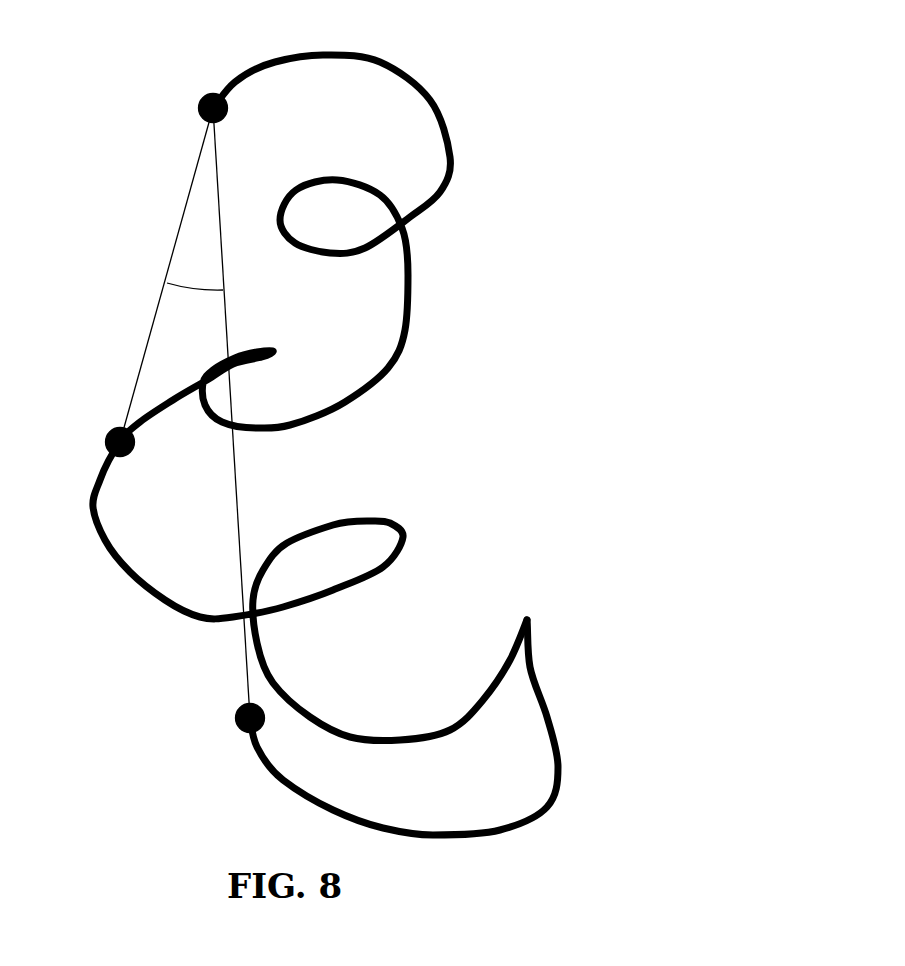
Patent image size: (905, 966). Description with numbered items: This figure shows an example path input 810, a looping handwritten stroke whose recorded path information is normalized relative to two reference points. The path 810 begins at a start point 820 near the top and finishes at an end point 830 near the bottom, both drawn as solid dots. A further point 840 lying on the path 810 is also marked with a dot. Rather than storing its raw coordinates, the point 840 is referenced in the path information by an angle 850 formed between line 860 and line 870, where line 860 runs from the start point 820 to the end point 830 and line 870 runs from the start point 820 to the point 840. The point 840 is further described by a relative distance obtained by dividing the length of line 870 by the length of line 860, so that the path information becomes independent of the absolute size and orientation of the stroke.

The path input 810 is at (412, 74).
The start point 820 is at (205, 100).
The end point 830 is at (240, 726).
The point 840 is at (112, 436).
The angle 850 is at (195, 300).
The line 860 is at (237, 470).
The line 870 is at (180, 225).